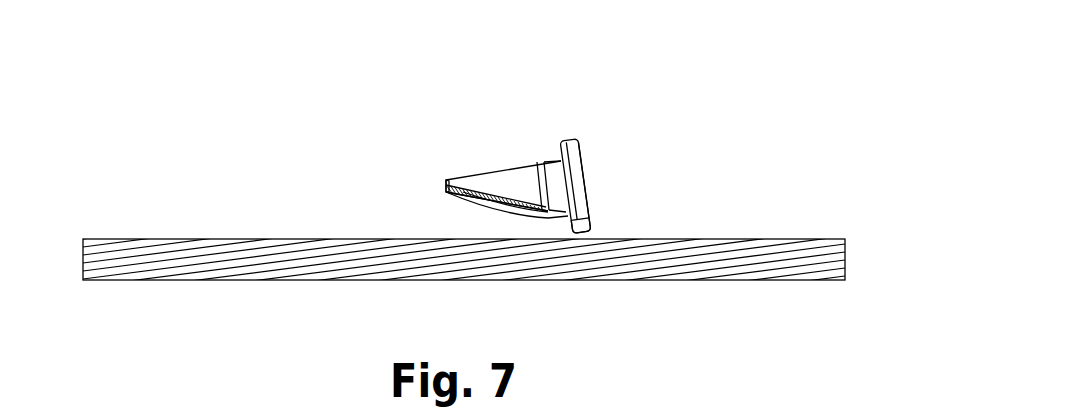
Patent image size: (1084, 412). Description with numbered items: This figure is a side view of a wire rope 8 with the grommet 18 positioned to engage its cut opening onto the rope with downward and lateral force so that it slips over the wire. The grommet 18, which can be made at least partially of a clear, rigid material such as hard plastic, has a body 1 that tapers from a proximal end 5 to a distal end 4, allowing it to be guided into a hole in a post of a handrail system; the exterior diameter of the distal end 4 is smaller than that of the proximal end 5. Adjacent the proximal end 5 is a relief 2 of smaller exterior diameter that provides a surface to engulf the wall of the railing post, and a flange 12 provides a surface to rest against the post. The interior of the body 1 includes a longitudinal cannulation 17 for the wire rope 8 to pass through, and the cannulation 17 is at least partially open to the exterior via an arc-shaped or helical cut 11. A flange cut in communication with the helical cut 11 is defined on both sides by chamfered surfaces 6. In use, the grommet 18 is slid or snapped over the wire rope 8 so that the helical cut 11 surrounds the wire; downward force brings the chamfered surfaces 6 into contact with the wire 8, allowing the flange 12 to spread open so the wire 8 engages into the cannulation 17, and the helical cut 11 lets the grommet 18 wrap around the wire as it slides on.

The body 1 is at (507, 185).
The relief 2 is at (550, 163).
The distal end 4 is at (447, 187).
The proximal end 5 is at (538, 163).
The chamfered surfaces 6 is at (592, 221).
The wire rope 8 is at (723, 248).
The helical cut 11 is at (447, 192).
The flange 12 is at (577, 140).
The longitudinal cannulation 17 is at (490, 197).
The grommet 18 is at (625, 145).